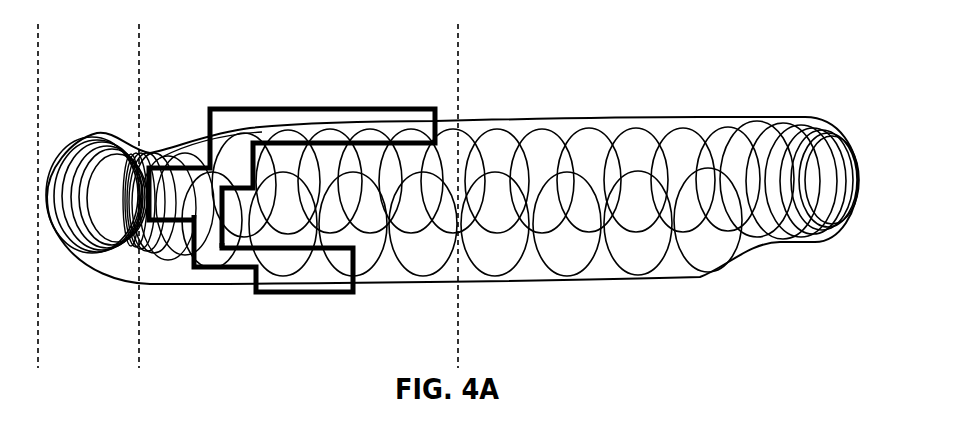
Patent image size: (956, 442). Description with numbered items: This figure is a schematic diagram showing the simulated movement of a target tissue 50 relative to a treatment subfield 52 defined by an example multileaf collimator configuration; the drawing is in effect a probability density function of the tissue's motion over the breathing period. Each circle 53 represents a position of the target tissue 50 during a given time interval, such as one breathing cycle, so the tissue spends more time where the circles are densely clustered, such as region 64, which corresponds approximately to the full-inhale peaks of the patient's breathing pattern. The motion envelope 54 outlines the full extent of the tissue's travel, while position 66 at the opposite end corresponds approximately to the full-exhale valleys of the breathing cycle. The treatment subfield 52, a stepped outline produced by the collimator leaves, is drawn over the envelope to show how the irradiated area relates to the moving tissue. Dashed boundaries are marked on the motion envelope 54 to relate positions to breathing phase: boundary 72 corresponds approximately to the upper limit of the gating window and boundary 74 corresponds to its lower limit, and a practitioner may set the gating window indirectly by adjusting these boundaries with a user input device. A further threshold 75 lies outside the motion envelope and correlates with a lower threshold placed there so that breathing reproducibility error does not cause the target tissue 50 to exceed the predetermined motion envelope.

The target tissue 50 is at (752, 127).
The treatment subfield 52 is at (240, 108).
The circle 53 is at (720, 136).
The motion envelope 54 is at (222, 283).
The region 64 is at (800, 255).
The position 66 is at (73, 125).
The boundary 72 is at (458, 72).
The boundary 74 is at (140, 72).
The threshold 75 is at (38, 327).